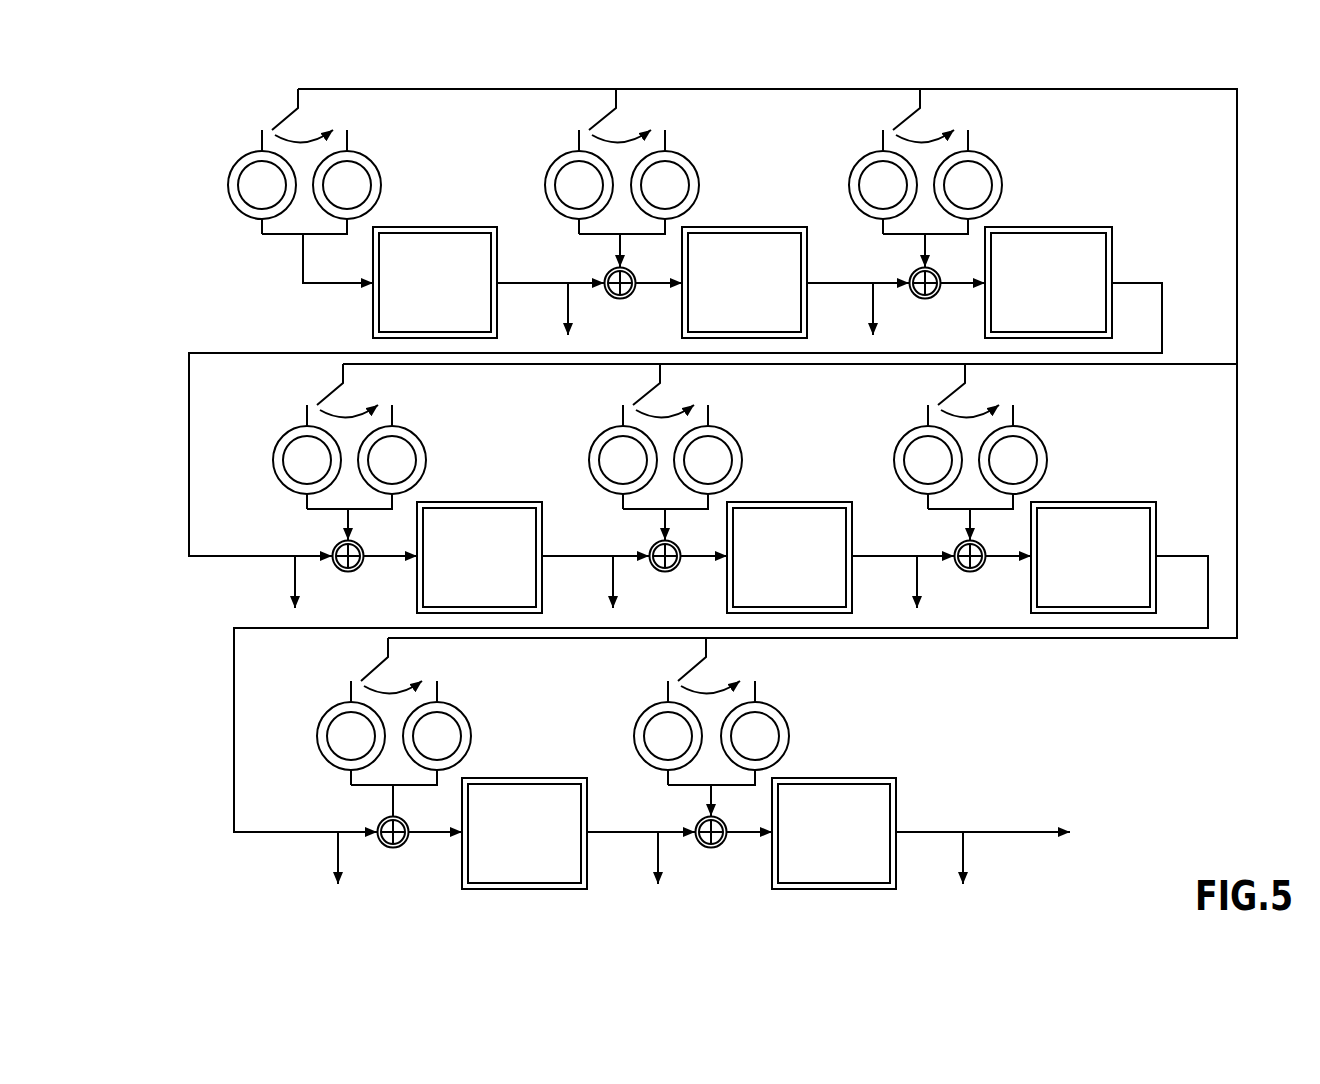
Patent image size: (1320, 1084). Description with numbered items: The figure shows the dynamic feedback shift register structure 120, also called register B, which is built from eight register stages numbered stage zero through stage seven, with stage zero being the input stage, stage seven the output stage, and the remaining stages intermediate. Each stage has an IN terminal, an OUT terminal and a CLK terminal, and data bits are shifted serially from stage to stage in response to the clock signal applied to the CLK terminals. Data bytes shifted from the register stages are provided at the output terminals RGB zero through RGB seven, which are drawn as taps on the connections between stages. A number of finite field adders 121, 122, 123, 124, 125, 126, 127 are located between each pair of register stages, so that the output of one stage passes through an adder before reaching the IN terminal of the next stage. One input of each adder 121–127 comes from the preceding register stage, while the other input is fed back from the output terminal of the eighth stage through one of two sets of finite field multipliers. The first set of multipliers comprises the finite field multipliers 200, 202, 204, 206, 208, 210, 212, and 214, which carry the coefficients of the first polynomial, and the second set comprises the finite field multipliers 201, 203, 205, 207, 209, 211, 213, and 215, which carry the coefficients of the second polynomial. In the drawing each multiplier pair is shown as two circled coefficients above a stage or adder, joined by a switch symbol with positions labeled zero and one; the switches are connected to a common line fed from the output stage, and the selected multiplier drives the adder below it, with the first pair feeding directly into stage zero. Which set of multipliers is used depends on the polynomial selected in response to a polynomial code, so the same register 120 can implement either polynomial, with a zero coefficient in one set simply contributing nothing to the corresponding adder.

The dynamic feedback shift register structure 120 is at (168, 140).
The finite field adder 121 is at (620, 300).
The finite field adder 122 is at (925, 300).
The finite field adder 123 is at (348, 573).
The finite field adder 124 is at (665, 573).
The finite field adder 125 is at (970, 573).
The finite field adder 126 is at (393, 849).
The finite field adder 127 is at (711, 849).
The finite field multiplier 200 is at (231, 180).
The finite field multiplier 201 is at (371, 157).
The finite field multiplier 202 is at (548, 180).
The finite field multiplier 203 is at (689, 157).
The finite field multiplier 204 is at (853, 180).
The finite field multiplier 205 is at (993, 157).
The finite field multiplier 206 is at (277, 455).
The finite field multiplier 207 is at (416, 432).
The finite field multiplier 208 is at (592, 455).
The finite field multiplier 209 is at (733, 432).
The finite field multiplier 210 is at (898, 455).
The finite field multiplier 211 is at (1038, 432).
The finite field multiplier 212 is at (321, 730).
The finite field multiplier 213 is at (461, 707).
The finite field multiplier 214 is at (639, 730).
The finite field multiplier 215 is at (779, 707).